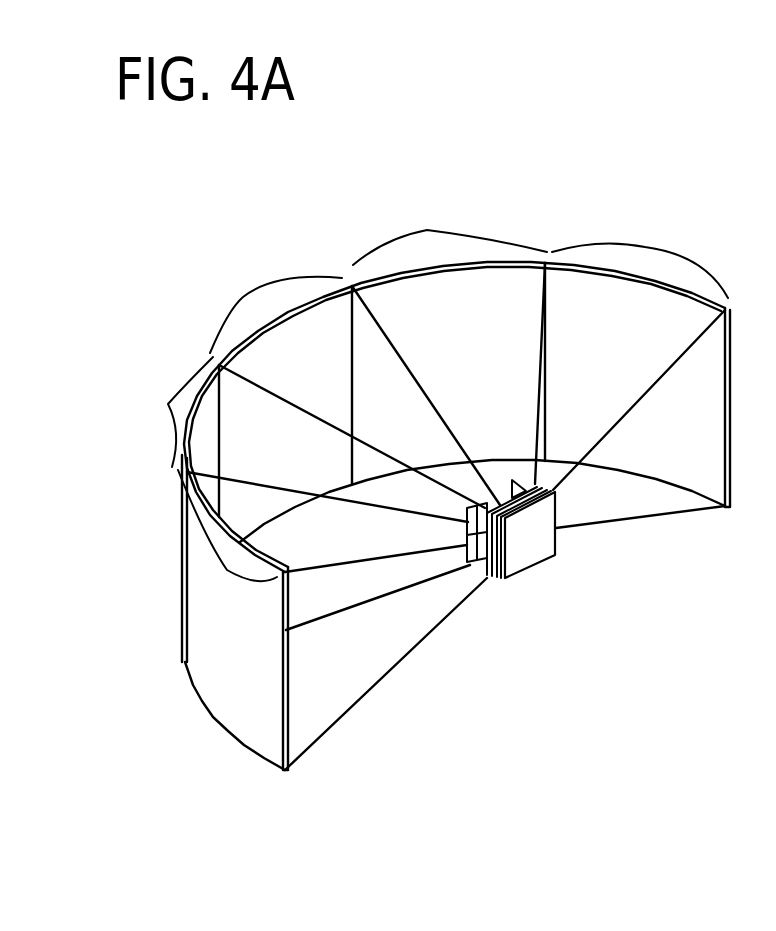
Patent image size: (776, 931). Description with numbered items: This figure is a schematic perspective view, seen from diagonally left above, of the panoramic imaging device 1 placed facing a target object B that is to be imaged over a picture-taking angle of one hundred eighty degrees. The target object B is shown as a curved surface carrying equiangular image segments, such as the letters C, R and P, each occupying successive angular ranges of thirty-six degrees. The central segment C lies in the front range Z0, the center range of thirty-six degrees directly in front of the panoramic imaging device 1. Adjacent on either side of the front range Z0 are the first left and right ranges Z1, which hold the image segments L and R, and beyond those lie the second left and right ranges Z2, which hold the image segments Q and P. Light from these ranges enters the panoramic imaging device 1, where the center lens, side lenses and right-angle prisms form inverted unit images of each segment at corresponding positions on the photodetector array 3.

The panoramic imaging device 1 is at (549, 590).
The photodetector array 3 is at (542, 537).
The target object B is at (329, 248).
The front range Z0 is at (272, 307).
The first left and right ranges Z1 is at (336, 328).
The second left and right ranges Z2 is at (453, 403).